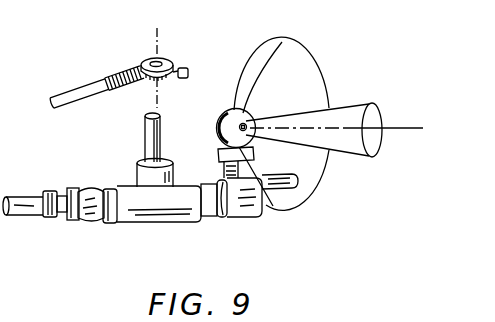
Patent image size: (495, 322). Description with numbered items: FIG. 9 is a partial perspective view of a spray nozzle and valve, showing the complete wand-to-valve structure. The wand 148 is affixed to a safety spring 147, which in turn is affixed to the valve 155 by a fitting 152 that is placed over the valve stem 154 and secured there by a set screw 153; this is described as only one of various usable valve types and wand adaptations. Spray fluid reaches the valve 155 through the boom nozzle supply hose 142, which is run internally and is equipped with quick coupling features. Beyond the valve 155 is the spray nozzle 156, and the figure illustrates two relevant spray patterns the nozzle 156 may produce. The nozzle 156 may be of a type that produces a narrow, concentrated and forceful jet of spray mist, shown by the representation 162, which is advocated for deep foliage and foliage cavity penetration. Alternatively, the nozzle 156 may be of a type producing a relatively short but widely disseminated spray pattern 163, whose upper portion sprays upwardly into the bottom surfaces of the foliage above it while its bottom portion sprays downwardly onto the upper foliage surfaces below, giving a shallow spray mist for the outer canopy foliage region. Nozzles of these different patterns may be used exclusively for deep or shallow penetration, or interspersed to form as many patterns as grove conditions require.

The boom nozzle supply hose 142 is at (297, 181).
The safety spring 147 is at (128, 71).
The wand 148 is at (85, 91).
The fitting 152 is at (161, 60).
The set screw 153 is at (189, 70).
The valve stem 154 is at (161, 113).
The valve 155 is at (139, 158).
The spray nozzle 156 is at (216, 121).
The representation of narrow concentrated spray jet 162 is at (375, 118).
The widely disseminated spray pattern 163 is at (304, 78).